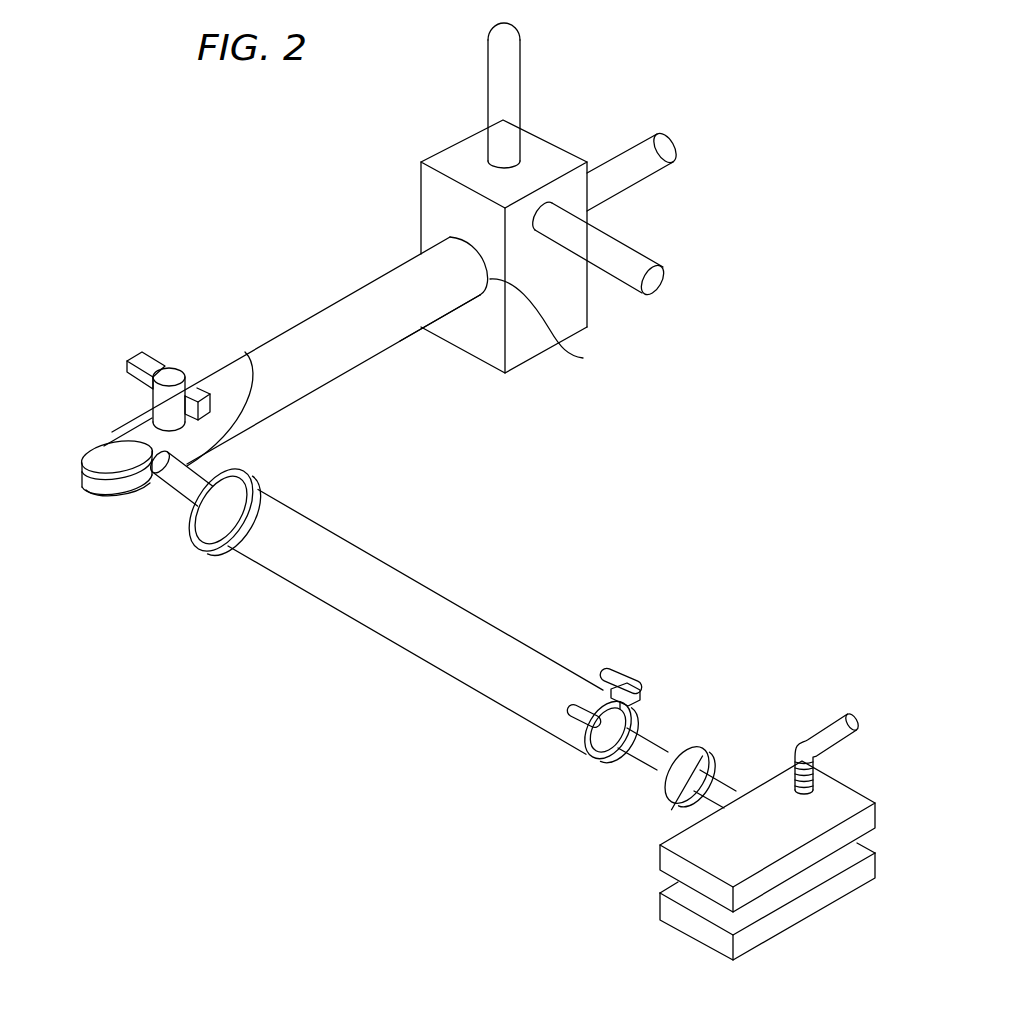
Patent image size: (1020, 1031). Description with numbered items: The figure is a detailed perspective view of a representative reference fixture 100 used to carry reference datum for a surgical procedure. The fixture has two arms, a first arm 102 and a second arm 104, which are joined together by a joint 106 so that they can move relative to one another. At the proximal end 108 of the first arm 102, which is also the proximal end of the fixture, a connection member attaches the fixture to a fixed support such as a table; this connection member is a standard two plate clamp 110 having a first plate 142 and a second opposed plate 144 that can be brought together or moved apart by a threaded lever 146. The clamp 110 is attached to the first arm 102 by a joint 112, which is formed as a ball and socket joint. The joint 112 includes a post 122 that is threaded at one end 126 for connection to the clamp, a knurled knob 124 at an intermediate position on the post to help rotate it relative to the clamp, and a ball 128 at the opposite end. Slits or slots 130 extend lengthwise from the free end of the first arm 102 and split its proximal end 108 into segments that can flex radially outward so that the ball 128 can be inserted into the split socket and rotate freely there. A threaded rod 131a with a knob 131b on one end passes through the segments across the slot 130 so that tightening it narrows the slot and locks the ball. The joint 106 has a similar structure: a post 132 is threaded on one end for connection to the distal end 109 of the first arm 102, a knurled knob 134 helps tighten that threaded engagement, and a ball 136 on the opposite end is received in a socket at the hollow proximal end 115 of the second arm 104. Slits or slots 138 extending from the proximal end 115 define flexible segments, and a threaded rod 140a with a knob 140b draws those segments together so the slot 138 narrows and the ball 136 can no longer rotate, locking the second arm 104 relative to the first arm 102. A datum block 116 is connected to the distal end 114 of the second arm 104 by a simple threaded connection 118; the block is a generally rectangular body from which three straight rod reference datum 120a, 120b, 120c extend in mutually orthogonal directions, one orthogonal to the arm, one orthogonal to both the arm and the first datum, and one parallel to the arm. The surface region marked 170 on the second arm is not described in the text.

The reference fixture 100 is at (268, 254).
The first arm 102 is at (413, 596).
The second arm 104 is at (302, 399).
The joint 106 is at (168, 538).
The proximal end of arm 102 108 is at (613, 646).
The distal end of arm 102 109 is at (226, 566).
The two plate clamp 110 is at (753, 858).
The joint 112 is at (724, 662).
The distal end of arm 104 114 is at (396, 245).
The proximal end of arm 104 115 is at (232, 456).
The datum block 116 is at (430, 190).
The threaded connection 118 is at (552, 326).
The reference datum 120a is at (487, 72).
The reference datum 120b is at (647, 255).
The reference datum 120c is at (647, 138).
The post 122 is at (730, 787).
The knurled knob 124 is at (707, 750).
The threaded end of post 122 126 is at (678, 810).
The ball 128 is at (592, 757).
The slits or slots 130 is at (574, 727).
The threaded rod 131a is at (637, 699).
The knob 131b is at (615, 673).
The post 132 is at (250, 358).
The knurled knob 134 is at (262, 483).
The ball 136 is at (128, 499).
The slits or slots 138 is at (107, 446).
The threaded rod 140a is at (163, 400).
The knob 140b is at (138, 371).
The first plate 142 is at (660, 872).
The second opposed plate 144 is at (675, 930).
The threaded lever 146 is at (838, 712).
The tube surface 170 is at (400, 342).